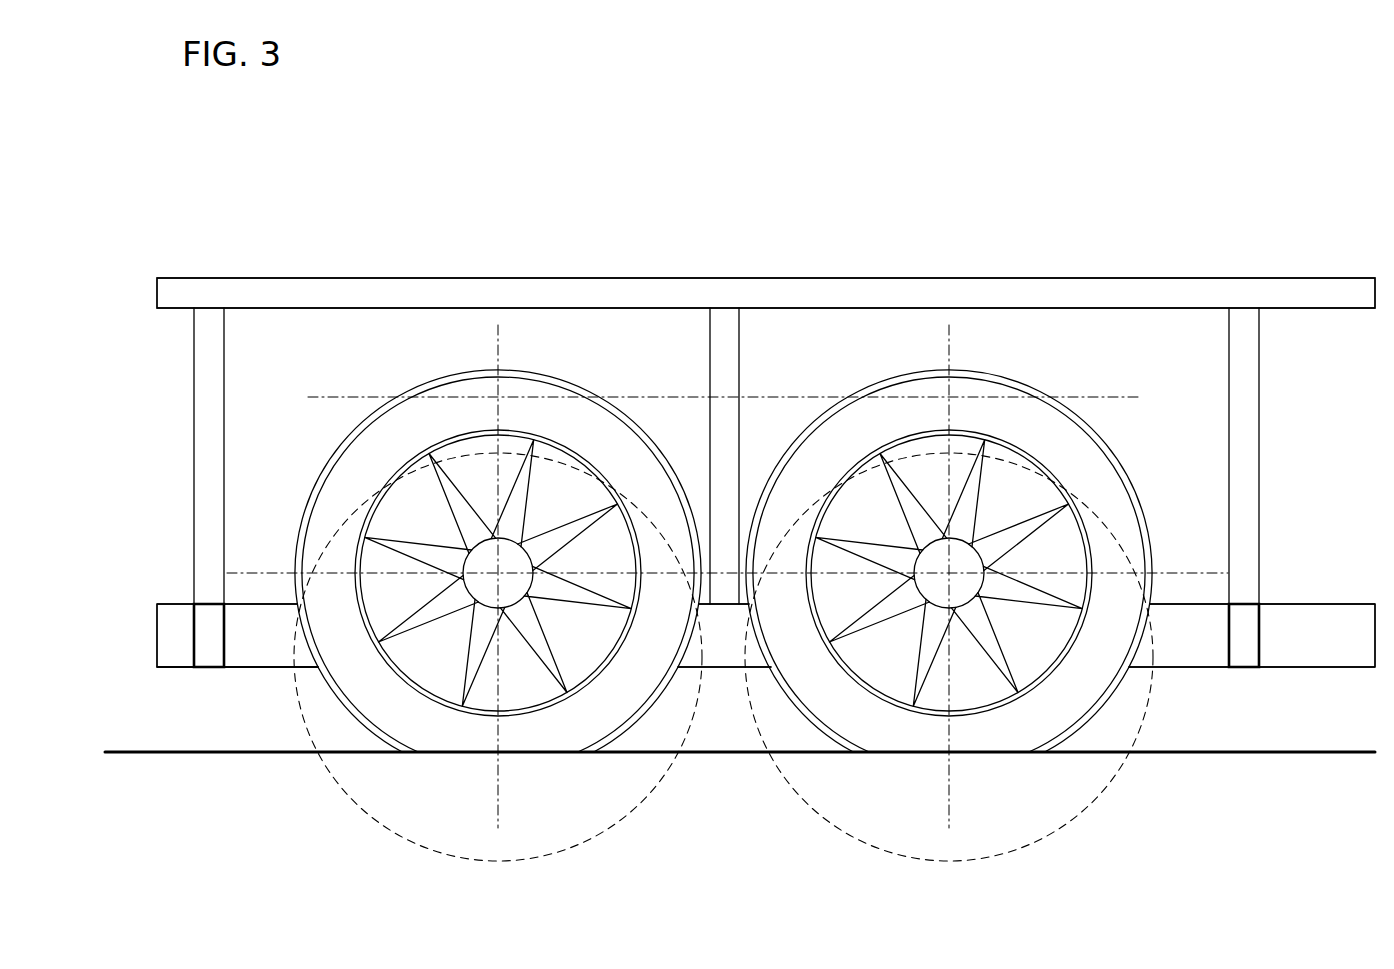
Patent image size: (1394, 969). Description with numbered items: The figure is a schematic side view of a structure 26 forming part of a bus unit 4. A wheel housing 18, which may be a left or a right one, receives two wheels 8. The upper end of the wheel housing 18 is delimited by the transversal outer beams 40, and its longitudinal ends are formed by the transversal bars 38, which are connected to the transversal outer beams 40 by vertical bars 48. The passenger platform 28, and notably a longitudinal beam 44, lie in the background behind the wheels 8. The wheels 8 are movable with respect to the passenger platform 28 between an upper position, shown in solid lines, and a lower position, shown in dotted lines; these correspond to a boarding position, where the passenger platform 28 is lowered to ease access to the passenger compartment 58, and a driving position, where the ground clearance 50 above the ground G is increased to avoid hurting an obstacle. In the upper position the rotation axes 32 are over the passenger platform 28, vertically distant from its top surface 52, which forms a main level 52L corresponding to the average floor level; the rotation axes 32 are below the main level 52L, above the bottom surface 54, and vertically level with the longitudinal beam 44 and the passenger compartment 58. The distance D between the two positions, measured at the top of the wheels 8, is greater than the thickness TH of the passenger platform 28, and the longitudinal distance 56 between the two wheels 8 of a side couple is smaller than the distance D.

The unit 4 is at (504, 186).
The wheels 8 is at (624, 406).
The wheel housing 18 is at (1168, 355).
The structure 26 is at (922, 215).
The passenger platform 28 is at (710, 690).
The rotation axis 32 is at (493, 565).
The transversal bars 38 is at (208, 640).
The transversal outer beams 40 is at (378, 300).
The longitudinal beam 44 is at (726, 660).
The vertical bars 48 is at (205, 392).
The ground clearance 50 is at (1291, 669).
The top surface 52 is at (253, 603).
The main level 52L is at (1190, 598).
The bottom surface 54 is at (253, 669).
The longitudinal distance 56 is at (712, 573).
The passenger compartment 58 is at (1310, 565).
The distance D is at (498, 374).
The thickness TH is at (1291, 606).
The ground G is at (1200, 754).